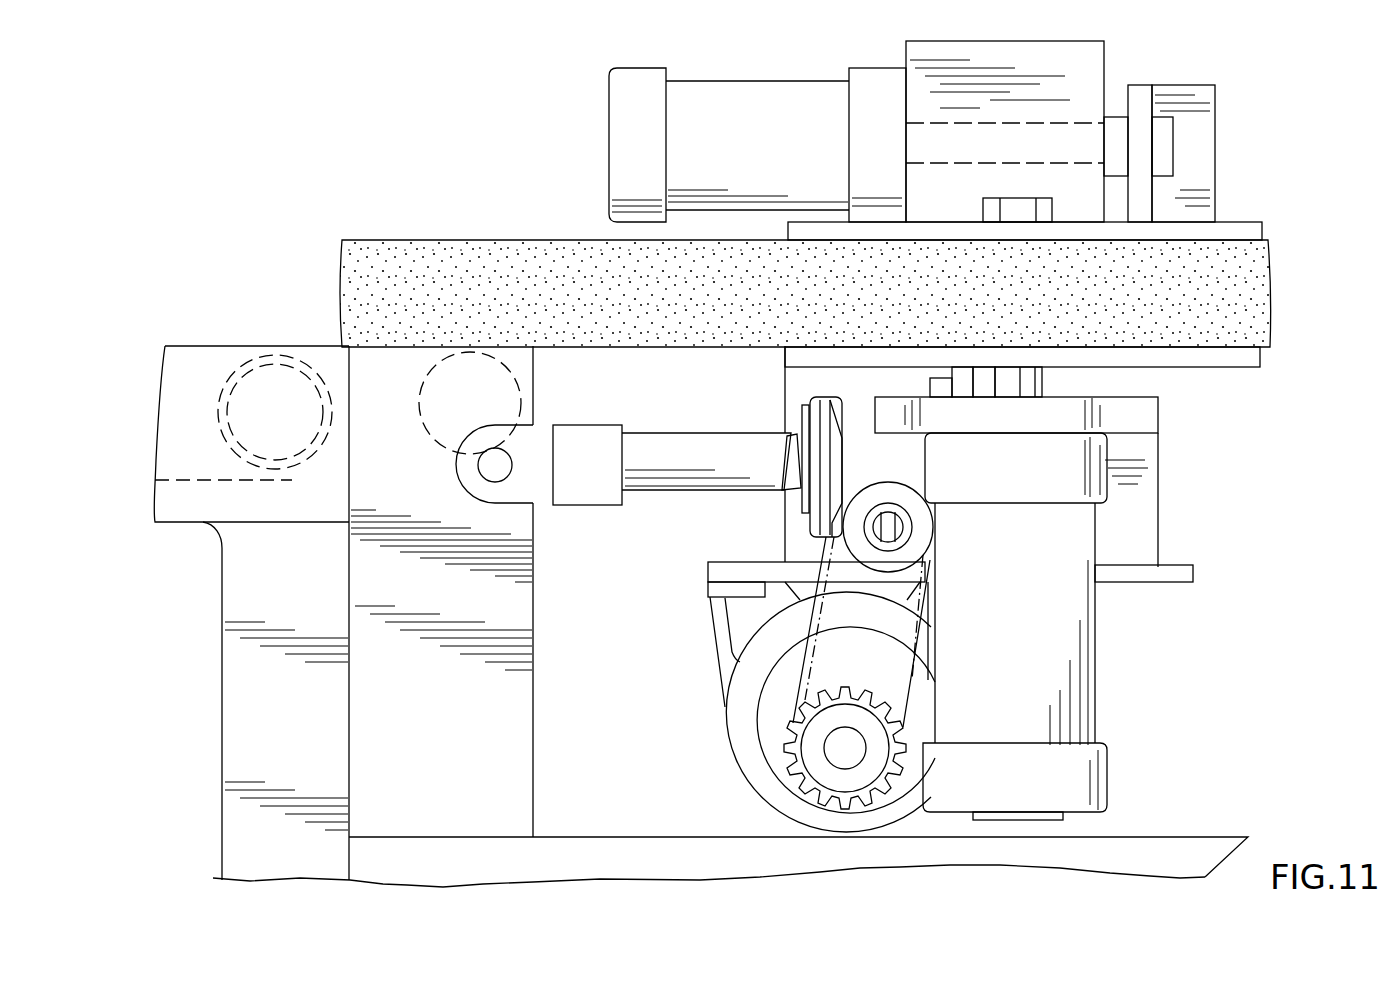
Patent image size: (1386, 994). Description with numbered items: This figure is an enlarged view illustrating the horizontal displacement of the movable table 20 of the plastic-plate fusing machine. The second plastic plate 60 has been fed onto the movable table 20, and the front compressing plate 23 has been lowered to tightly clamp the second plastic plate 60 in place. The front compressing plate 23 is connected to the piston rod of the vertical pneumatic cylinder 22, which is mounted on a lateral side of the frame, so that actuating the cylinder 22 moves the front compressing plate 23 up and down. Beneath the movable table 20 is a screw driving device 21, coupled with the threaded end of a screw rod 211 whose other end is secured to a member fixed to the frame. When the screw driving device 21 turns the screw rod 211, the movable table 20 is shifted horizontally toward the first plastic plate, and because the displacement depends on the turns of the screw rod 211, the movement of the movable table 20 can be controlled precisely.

The second plastic plate 60 is at (415, 268).
The front compressing plate 23 is at (1226, 236).
The movable table 20 is at (1224, 350).
The screw rod 211 is at (646, 450).
The screw driving device 21 is at (838, 420).
The vertical pneumatic cylinder 22 is at (1043, 697).